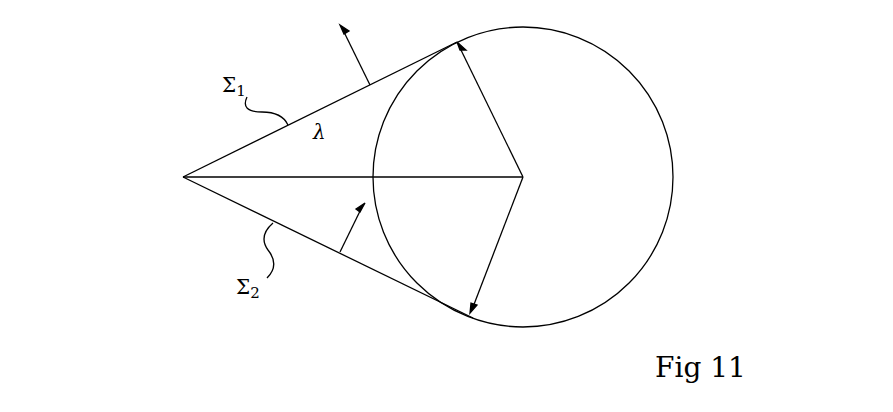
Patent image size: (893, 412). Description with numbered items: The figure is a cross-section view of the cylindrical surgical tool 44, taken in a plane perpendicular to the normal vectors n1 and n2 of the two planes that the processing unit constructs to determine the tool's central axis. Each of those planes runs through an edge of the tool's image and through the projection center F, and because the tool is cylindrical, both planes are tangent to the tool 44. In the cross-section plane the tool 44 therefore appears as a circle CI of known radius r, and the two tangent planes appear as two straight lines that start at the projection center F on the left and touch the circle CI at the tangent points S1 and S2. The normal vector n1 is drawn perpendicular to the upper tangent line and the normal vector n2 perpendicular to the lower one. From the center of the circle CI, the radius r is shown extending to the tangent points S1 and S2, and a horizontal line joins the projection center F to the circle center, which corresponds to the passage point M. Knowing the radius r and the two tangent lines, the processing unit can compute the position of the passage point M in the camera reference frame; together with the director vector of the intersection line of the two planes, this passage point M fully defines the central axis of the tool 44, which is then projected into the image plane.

The surgical tool 44 is at (637, 250).
The circle CI is at (544, 176).
The projection center F is at (182, 175).
The passage point M is at (523, 177).
The radius r is at (487, 113).
The tangent point on plane Σ1 S1 is at (451, 32).
The tangent point on plane Σ2 S2 is at (461, 325).
The normal vector to plane Σ1 n1 is at (377, 6).
The normal vector to plane Σ2 n2 is at (353, 192).